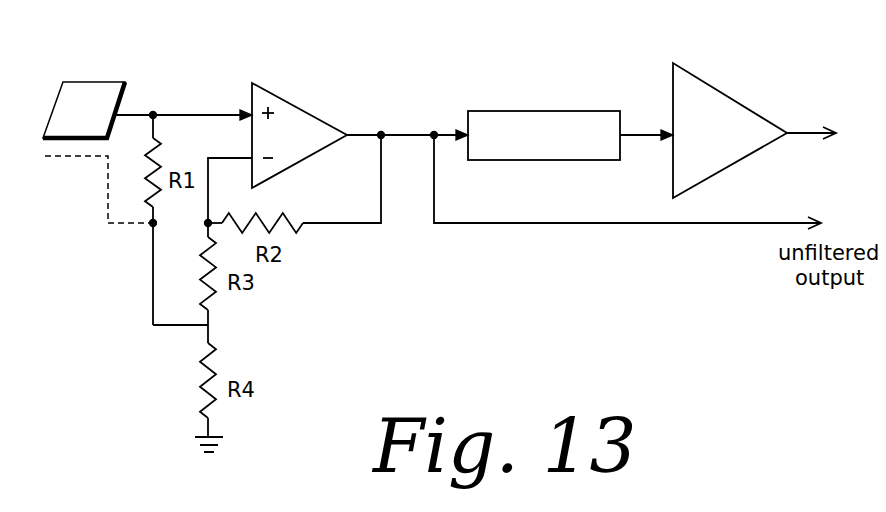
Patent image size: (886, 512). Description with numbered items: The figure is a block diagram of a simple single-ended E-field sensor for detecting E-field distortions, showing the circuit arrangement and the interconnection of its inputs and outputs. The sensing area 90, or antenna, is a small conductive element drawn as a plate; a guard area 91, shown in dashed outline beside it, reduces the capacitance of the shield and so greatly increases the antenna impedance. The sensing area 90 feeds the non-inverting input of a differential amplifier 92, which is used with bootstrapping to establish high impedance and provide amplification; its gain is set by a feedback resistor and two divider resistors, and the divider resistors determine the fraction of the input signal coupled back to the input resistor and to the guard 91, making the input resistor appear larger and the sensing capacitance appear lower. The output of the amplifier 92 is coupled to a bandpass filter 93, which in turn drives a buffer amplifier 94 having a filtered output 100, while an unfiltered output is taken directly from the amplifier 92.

The sensing area 90 is at (87, 80).
The guard area 91 is at (82, 157).
The differential amplifier 92 is at (297, 103).
The bandpass filter 93 is at (547, 111).
The buffer amplifier 94 is at (705, 80).
The filtered output 100 is at (805, 132).